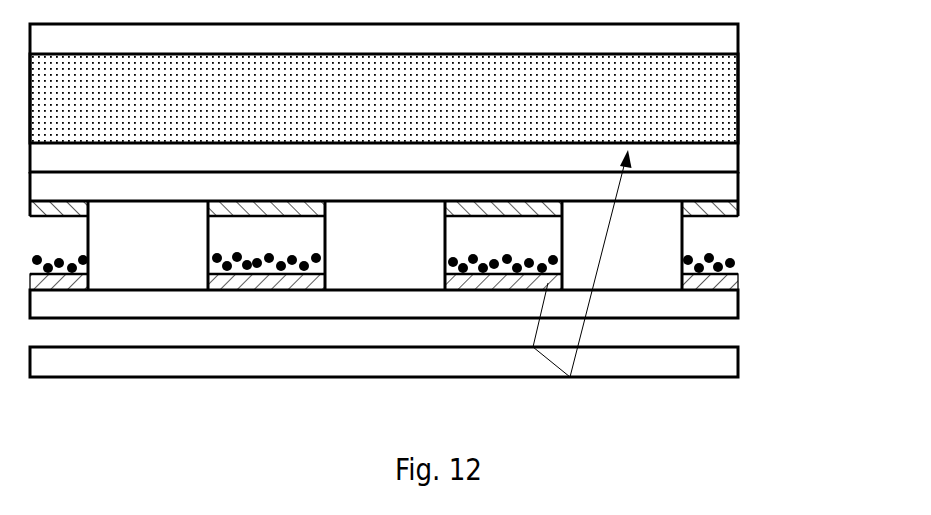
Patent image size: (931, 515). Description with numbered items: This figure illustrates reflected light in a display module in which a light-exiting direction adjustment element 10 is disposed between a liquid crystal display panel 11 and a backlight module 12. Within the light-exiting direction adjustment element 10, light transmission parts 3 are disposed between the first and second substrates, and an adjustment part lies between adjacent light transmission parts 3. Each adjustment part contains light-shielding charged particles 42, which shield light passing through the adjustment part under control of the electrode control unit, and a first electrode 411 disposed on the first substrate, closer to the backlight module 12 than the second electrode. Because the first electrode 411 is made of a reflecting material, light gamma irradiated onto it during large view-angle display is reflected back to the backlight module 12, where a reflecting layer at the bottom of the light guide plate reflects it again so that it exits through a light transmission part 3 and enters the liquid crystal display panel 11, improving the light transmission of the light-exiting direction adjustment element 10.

The liquid crystal display panel 11 is at (740, 24).
The light-exiting direction adjustment element 10 is at (415, 288).
The backlight module 12 is at (738, 360).
The first electrode 411 is at (276, 283).
The light transmission part 3 is at (385, 260).
The light-shielding charged particles 42 is at (455, 263).